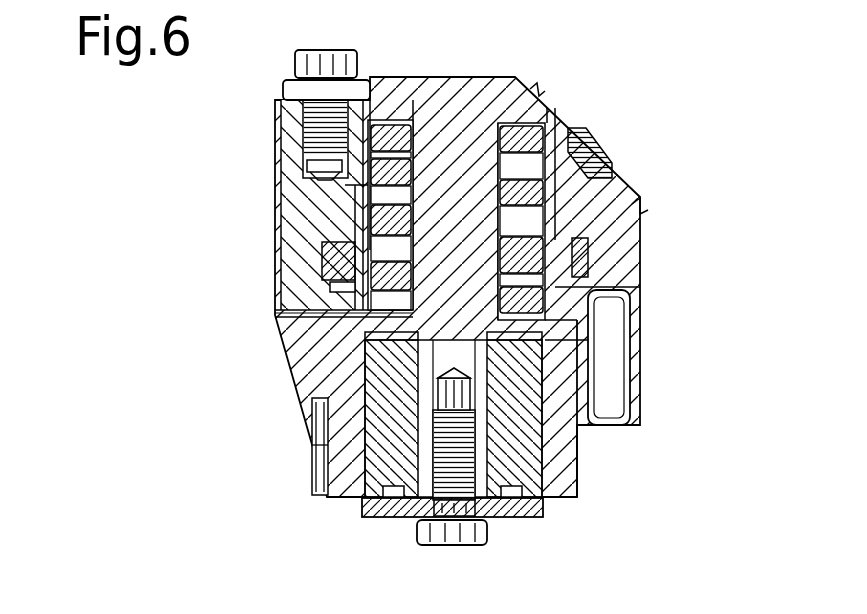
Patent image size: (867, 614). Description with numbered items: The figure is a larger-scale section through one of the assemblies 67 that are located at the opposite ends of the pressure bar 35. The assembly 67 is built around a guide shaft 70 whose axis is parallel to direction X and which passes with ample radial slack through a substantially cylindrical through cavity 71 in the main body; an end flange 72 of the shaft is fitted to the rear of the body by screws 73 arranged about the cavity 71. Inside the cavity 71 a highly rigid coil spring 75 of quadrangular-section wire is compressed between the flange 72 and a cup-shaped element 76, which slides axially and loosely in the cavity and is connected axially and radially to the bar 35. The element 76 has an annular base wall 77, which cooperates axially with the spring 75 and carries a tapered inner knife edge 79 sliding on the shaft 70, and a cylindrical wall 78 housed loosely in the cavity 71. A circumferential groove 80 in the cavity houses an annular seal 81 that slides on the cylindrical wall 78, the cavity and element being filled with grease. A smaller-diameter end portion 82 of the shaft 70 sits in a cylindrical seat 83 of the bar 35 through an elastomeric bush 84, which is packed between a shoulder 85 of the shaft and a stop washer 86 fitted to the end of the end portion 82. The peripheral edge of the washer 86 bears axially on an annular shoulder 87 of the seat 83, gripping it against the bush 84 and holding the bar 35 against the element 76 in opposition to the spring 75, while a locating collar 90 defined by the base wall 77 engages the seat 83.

The pressure bar 35 is at (345, 465).
The assembly 67 is at (592, 436).
The guide shaft 70 is at (462, 190).
The through cavity 71 is at (590, 143).
The end flange 72 is at (385, 85).
The screws 73 is at (305, 128).
The coil spring 75 is at (360, 200).
The cup-shaped element 76 is at (340, 293).
The annular base wall 77 is at (330, 312).
The cylindrical wall 78 is at (556, 288).
The tapered inner knife edge 79 is at (590, 328).
The circumferential groove 80 is at (577, 258).
The annular seal 81 is at (345, 248).
The end portion 82 is at (495, 502).
The cylindrical seat 83 is at (378, 491).
The bush 84 is at (385, 405).
The shoulder 85 is at (412, 346).
The stop washer 86 is at (542, 508).
The annular shoulder 87 is at (380, 520).
The locating collar 90 is at (562, 320).